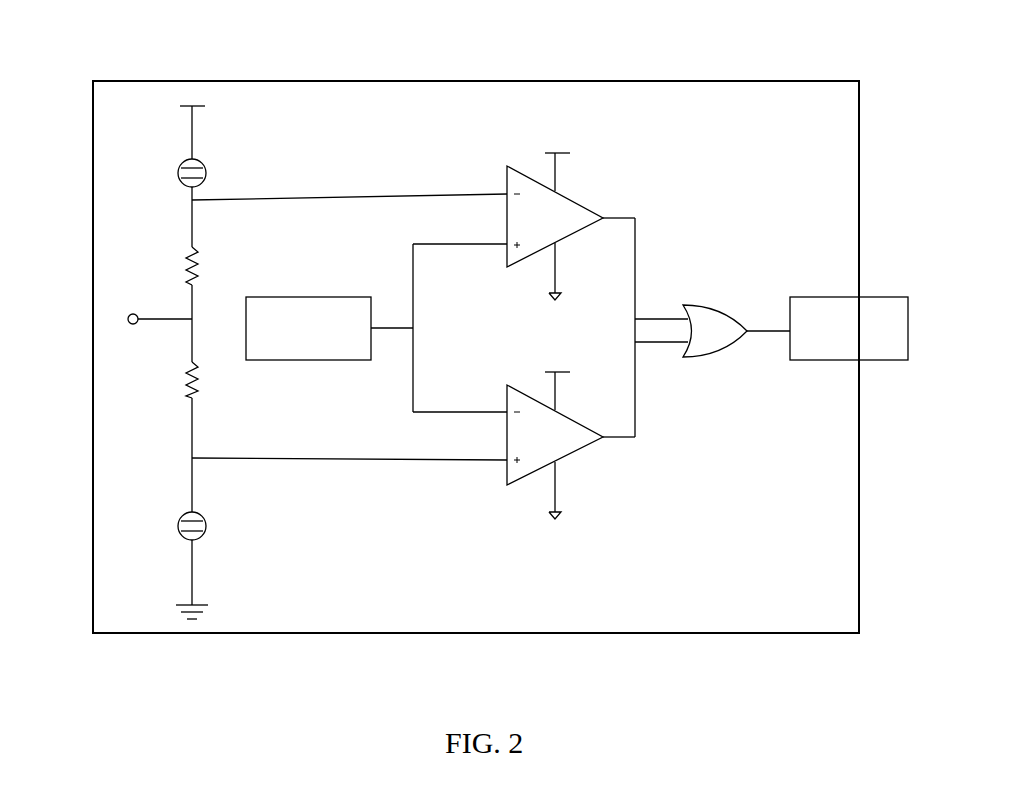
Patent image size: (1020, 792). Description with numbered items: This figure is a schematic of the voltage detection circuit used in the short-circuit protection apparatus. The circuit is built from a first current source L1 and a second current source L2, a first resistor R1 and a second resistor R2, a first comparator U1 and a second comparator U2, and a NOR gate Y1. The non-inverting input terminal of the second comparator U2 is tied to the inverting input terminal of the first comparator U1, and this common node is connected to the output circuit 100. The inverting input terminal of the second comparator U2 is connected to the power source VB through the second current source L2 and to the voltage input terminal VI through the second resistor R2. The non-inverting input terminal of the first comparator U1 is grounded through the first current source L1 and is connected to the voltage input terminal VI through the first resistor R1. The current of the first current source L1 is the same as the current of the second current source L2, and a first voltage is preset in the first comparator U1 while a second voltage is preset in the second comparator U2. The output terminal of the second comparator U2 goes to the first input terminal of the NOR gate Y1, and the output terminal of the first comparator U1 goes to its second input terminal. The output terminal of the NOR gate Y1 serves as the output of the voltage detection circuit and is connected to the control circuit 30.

The output circuit 100 is at (278, 297).
The control circuit 30 is at (812, 297).
The first resistor R1 is at (175, 380).
The second resistor R2 is at (175, 266).
The first current source L1 is at (204, 526).
The second current source L2 is at (203, 173).
The first comparator U1 is at (536, 445).
The second comparator U2 is at (539, 226).
The NOR gate Y1 is at (715, 322).
The power source VB is at (204, 98).
The voltage input terminal VI is at (145, 320).